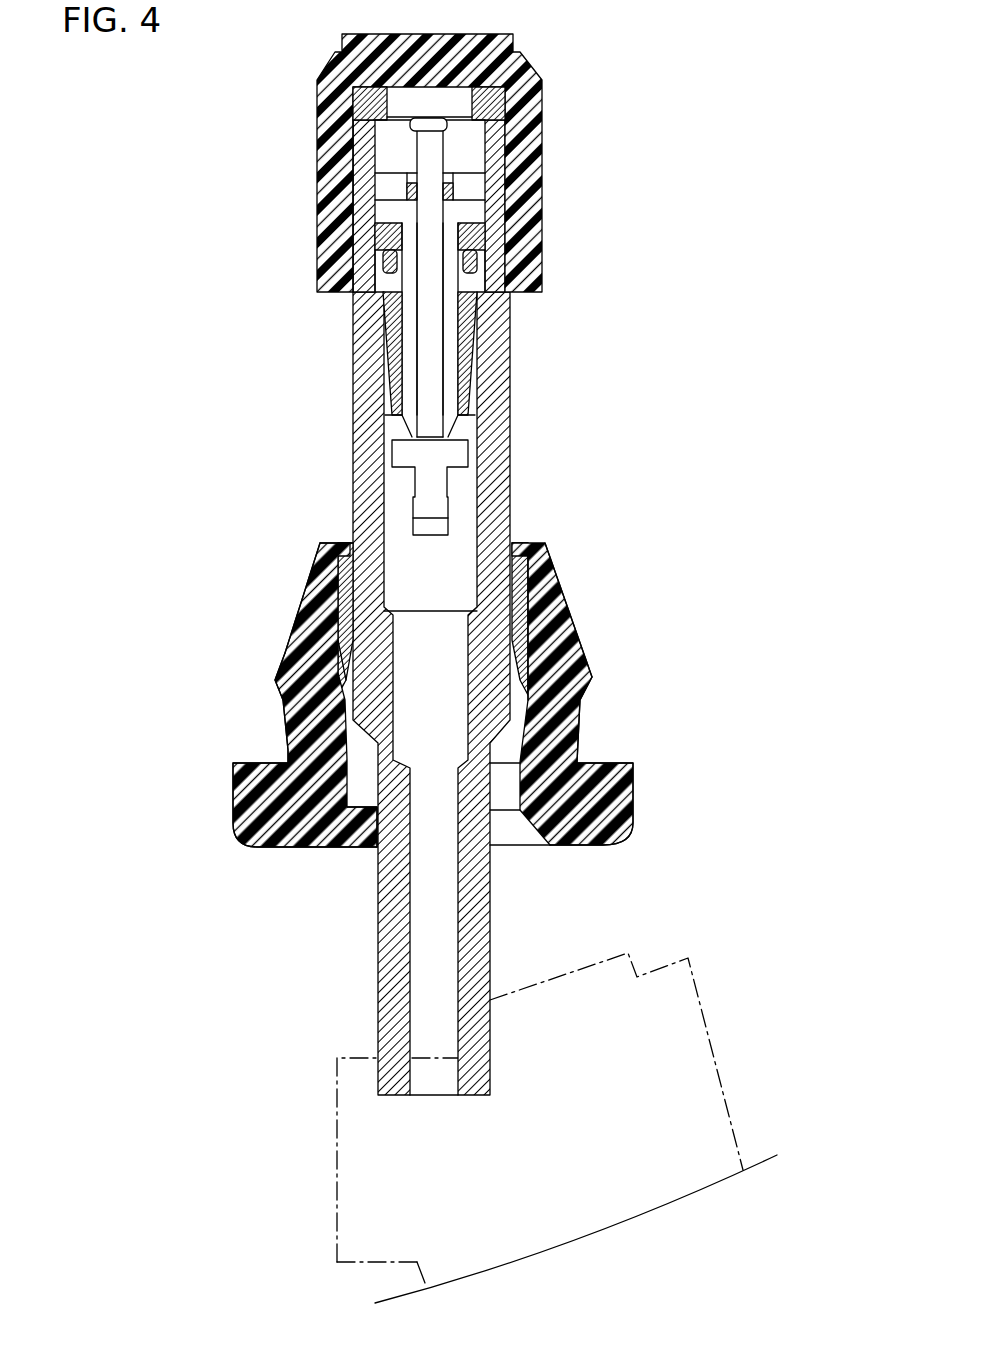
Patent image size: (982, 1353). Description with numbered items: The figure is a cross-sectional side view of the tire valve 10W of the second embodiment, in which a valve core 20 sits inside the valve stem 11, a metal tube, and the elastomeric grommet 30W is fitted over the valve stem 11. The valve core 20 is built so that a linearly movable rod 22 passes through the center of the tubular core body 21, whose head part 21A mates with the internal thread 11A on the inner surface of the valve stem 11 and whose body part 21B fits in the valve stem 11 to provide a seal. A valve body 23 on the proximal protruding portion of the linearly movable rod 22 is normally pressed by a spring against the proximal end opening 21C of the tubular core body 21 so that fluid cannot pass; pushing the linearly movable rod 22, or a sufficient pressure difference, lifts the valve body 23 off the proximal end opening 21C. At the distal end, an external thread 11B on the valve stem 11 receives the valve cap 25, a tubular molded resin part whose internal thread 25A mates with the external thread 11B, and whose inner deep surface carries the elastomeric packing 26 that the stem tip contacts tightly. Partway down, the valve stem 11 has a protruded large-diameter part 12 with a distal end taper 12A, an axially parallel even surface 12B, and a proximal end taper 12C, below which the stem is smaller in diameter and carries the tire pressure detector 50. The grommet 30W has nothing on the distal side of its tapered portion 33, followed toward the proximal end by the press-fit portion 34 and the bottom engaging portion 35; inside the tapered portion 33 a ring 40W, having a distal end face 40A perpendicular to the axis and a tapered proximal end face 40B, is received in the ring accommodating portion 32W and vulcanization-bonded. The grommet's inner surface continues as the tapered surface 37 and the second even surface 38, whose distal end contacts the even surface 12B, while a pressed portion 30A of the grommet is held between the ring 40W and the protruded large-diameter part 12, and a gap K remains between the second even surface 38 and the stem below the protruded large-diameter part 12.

The tire valve 10W is at (600, 60).
The valve stem 11 is at (503, 375).
The internal thread 11A is at (495, 148).
The external thread 11B is at (358, 182).
The protruded large-diameter part 12 is at (553, 702).
The distal end taper 12A is at (565, 640).
The even surface 12B is at (530, 688).
The proximal end taper 12C is at (585, 765).
The valve core 20 is at (478, 214).
The tubular core body 21 is at (480, 262).
The head part 21A is at (486, 235).
The body part 21B is at (470, 300).
The proximal end opening 21C is at (470, 437).
The linearly movable rod 22 is at (433, 322).
The valve body 23 is at (455, 458).
The valve cap 25 is at (330, 98).
The internal thread 25A is at (350, 150).
The packing 26 is at (350, 85).
The grommet 30W is at (548, 548).
The pressed portion 30A is at (556, 678).
The ring accommodating portion 32W is at (338, 563).
The tapered portion 33 is at (292, 603).
The press-fit portion 34 is at (282, 722).
The bottom engaging portion 35 is at (235, 798).
The tapered surface 37 is at (320, 667).
The second even surface 38 is at (360, 780).
The distal end face 40A is at (345, 543).
The proximal end face 40B is at (336, 648).
The ring 40W is at (522, 568).
The tire pressure detector 50 is at (722, 1012).
The gap K is at (505, 770).